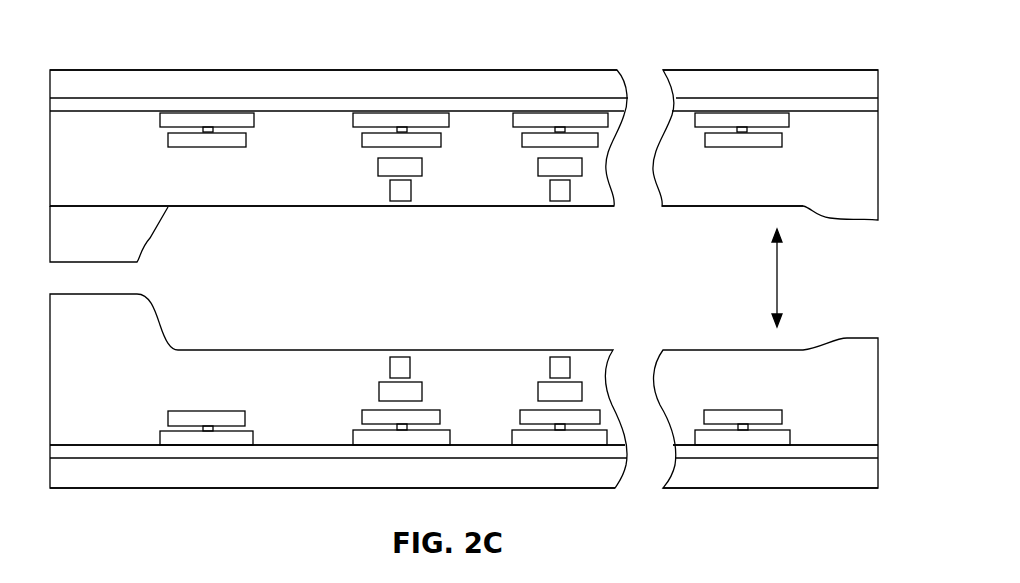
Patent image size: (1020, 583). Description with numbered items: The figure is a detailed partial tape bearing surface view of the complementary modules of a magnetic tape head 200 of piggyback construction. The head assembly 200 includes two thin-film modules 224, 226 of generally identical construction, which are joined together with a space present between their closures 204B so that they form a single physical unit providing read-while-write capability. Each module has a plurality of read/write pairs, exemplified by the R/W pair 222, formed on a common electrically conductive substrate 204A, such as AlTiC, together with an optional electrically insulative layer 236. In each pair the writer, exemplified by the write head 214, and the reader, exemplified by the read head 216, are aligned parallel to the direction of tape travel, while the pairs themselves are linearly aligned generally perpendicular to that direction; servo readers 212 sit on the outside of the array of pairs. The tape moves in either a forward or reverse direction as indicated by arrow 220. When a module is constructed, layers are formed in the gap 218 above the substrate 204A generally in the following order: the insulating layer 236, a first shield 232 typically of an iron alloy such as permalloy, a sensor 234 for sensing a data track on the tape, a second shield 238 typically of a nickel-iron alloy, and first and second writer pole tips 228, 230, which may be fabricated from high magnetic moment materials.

The magnetic tape head 200 is at (388, 52).
The common substrate 204A is at (186, 94).
The closure 204B is at (152, 242).
The servo reader 212 is at (251, 397).
The write head 214 is at (393, 356).
The read head 216 is at (383, 410).
The gap 218 is at (253, 207).
The arrow indicating direction of tape travel 220 is at (777, 282).
The read/write pair 222 is at (383, 362).
The thin-film module 224 is at (800, 70).
The thin-film module 226 is at (785, 488).
The first writer pole tip 228 is at (379, 393).
The second writer pole tip 230 is at (390, 360).
The first shield 232 is at (353, 434).
The sensor 234 is at (350, 423).
The electrically insulative layer 236 is at (868, 438).
The second shield 238 is at (362, 417).